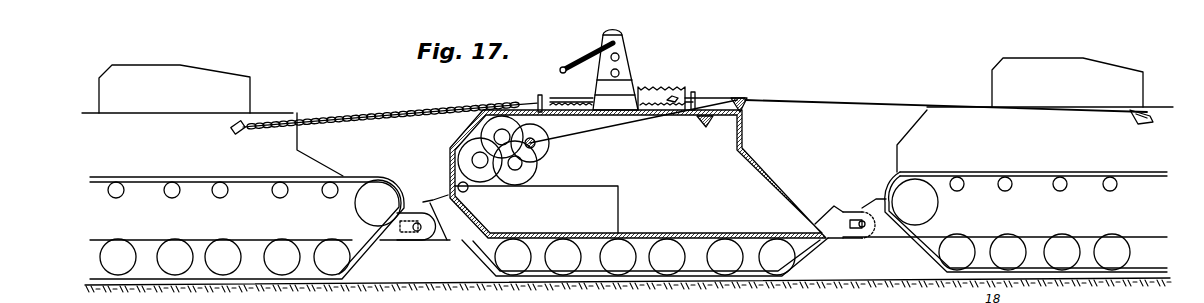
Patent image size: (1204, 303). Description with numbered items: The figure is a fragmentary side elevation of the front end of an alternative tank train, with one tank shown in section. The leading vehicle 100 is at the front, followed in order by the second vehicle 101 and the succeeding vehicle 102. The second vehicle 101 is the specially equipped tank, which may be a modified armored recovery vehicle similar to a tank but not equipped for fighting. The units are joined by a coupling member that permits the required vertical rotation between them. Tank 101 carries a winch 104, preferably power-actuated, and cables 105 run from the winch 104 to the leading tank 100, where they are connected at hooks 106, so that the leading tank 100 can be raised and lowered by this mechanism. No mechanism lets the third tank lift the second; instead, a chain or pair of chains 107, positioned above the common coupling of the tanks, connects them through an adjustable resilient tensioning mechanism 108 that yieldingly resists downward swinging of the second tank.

The leading vehicle 100 is at (1130, 70).
The second vehicle 101 is at (780, 163).
The succeeding vehicle 102 is at (330, 148).
The winch 104 is at (537, 165).
The cables 105 is at (850, 102).
The hooks 106 is at (1153, 120).
The chain 107 is at (413, 98).
The adjustable resilient tensioning mechanism 108 is at (676, 80).